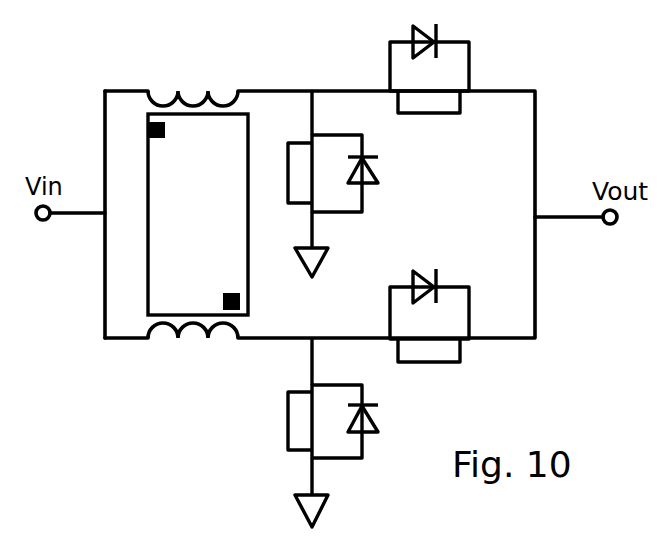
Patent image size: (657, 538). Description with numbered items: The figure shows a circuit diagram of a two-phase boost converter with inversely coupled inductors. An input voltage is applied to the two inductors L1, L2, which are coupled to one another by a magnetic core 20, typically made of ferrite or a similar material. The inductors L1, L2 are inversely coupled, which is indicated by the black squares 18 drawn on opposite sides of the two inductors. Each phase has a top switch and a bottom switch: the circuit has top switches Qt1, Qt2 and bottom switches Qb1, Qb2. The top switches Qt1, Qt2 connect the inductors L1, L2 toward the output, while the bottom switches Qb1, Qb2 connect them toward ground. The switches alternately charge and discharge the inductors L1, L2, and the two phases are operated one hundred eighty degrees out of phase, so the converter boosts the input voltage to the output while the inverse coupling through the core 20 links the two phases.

The black squares 18 is at (154, 138).
The magnetic core 20 is at (248, 218).
The inductor L1 is at (180, 91).
The inductor L2 is at (210, 339).
The top switch Qt1 is at (429, 68).
The top switch Qt2 is at (429, 315).
The bottom switch Qb1 is at (333, 184).
The bottom switch Qb2 is at (333, 432).